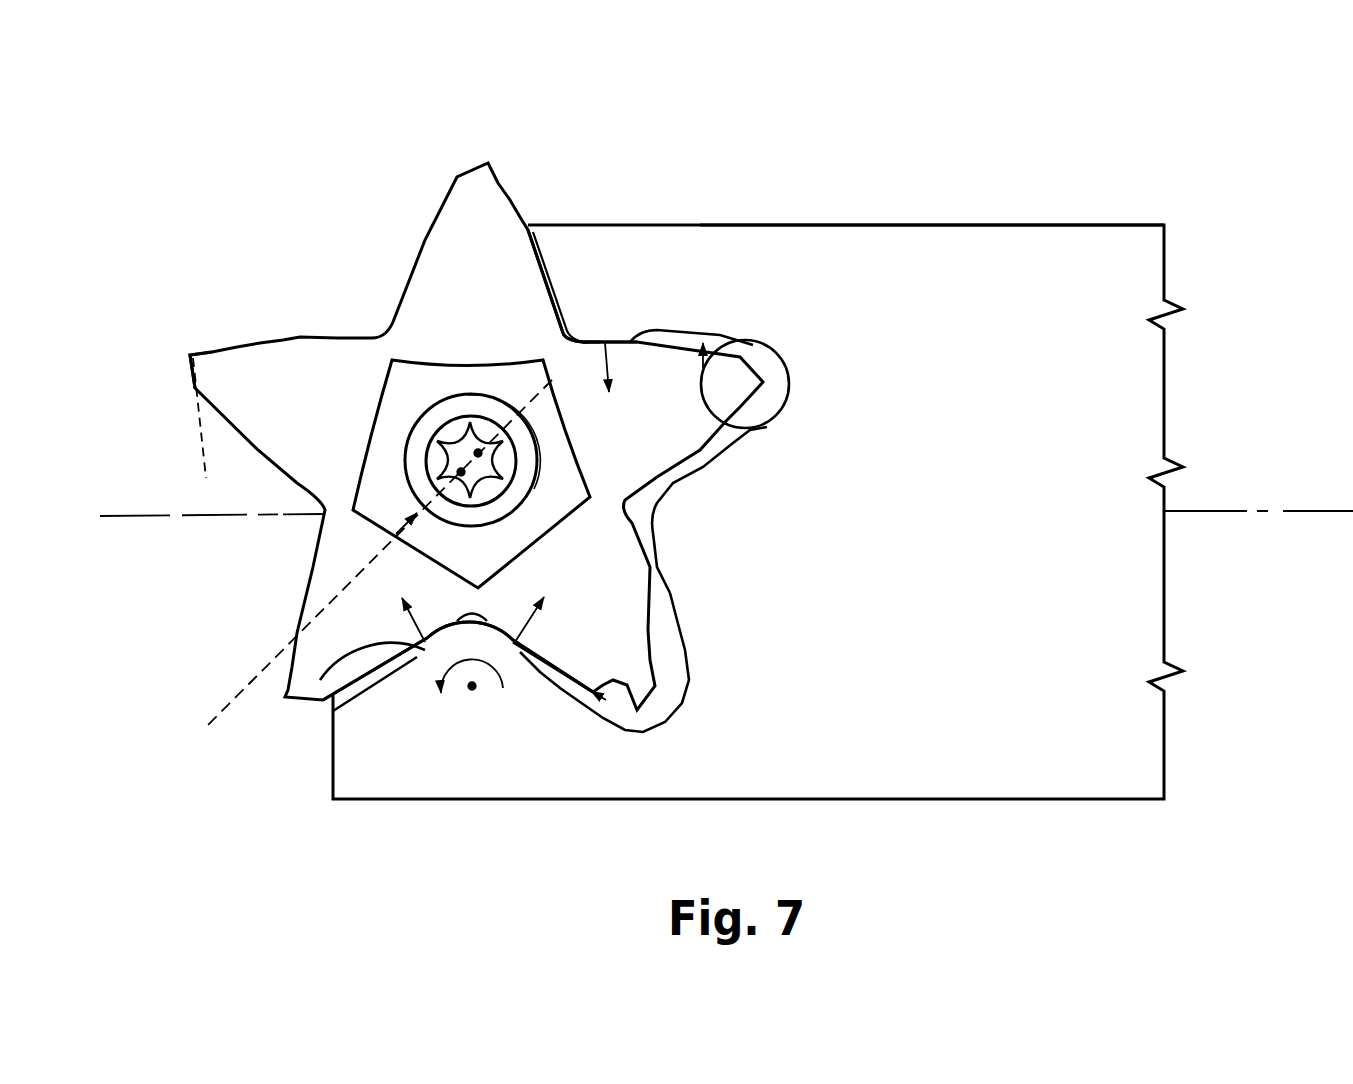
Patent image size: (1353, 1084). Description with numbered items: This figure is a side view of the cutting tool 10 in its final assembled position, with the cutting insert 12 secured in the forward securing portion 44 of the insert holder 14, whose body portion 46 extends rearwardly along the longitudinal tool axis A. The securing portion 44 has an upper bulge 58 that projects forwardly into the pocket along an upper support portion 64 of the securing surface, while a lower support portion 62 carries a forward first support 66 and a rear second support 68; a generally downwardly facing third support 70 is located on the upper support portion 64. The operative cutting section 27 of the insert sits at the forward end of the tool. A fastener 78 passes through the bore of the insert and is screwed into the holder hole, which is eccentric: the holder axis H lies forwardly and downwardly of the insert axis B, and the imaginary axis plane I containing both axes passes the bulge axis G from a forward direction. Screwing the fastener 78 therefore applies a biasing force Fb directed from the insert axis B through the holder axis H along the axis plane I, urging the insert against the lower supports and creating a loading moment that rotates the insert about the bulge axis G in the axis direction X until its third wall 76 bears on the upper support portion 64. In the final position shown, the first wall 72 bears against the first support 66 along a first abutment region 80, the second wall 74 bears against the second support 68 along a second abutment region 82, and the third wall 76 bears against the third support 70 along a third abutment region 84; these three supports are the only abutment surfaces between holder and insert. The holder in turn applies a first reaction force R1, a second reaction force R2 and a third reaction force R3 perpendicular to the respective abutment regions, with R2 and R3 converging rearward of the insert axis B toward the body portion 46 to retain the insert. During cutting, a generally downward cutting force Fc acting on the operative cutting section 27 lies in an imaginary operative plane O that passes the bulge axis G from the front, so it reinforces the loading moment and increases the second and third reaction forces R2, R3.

The cutting tool 10 is at (218, 146).
The cutting insert 12 is at (442, 190).
The insert holder 14 is at (1078, 217).
The operative cutting section 27 is at (183, 351).
The securing portion 44 is at (566, 211).
The body portion 46 is at (948, 208).
The upper bulge 58 is at (778, 264).
The lower support portion 62 is at (612, 682).
The upper support portion 64 is at (778, 425).
The first support 66 is at (312, 710).
The second support 68 is at (515, 641).
The third support 70 is at (622, 343).
The first wall 72 is at (450, 632).
The second wall 74 is at (492, 632).
The third wall 76 is at (590, 342).
The fastener 78 is at (448, 412).
The first abutment region 80 is at (419, 659).
The second abutment region 82 is at (521, 667).
The third abutment region 84 is at (613, 334).
The cutting force Fc is at (184, 344).
The biasing force Fb is at (460, 472).
The operative plane O is at (198, 433).
The tool axis A is at (224, 518).
The axis plane I is at (273, 657).
The holder axis H is at (460, 472).
The insert axis B is at (478, 453).
The first reaction force R1 is at (389, 613).
The second reaction force R2 is at (551, 611).
The third reaction force R3 is at (587, 378).
The axis direction X is at (472, 642).
The bulge axis G is at (472, 693).